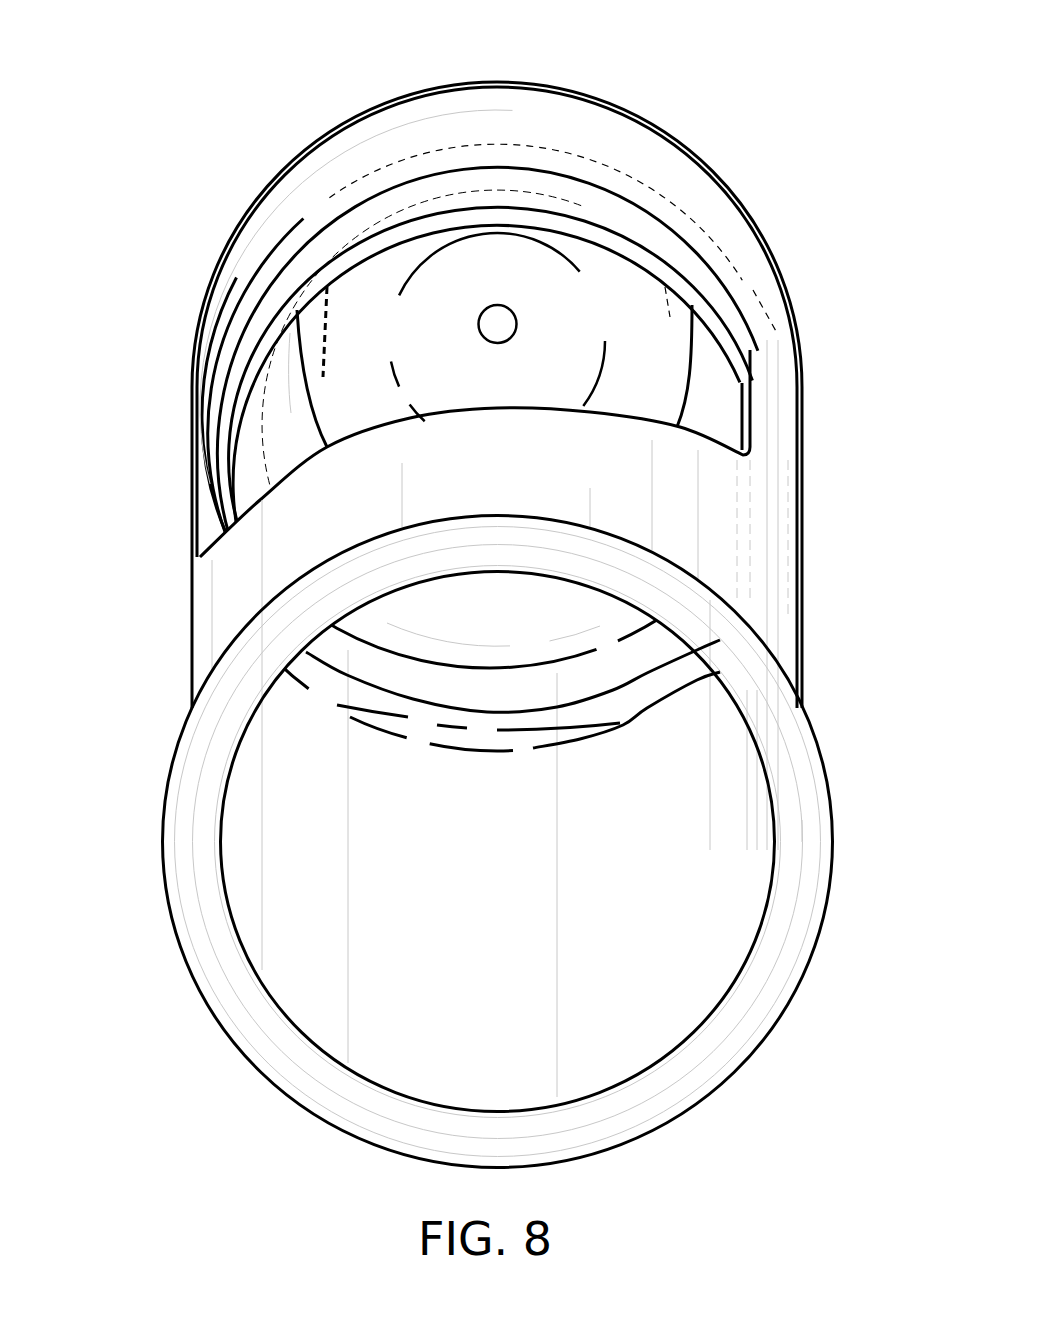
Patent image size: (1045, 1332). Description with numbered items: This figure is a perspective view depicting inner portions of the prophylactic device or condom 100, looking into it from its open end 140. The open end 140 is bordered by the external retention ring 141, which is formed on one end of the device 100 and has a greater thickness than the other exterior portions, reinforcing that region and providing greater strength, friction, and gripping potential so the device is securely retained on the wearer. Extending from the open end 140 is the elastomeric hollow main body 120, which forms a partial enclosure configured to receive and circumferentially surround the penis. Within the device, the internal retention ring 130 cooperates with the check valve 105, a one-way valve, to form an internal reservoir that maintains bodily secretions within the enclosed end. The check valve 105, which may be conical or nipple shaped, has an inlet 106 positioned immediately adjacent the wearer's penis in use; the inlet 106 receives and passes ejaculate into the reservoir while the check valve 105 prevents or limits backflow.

The prophylactic device/condom 100 is at (120, 133).
The check valve 105 is at (563, 300).
The inlet 106 is at (493, 330).
The main body 120 is at (722, 545).
The internal retention ring 130 is at (543, 727).
The open end 140 is at (440, 912).
The external retention ring 141 is at (185, 793).